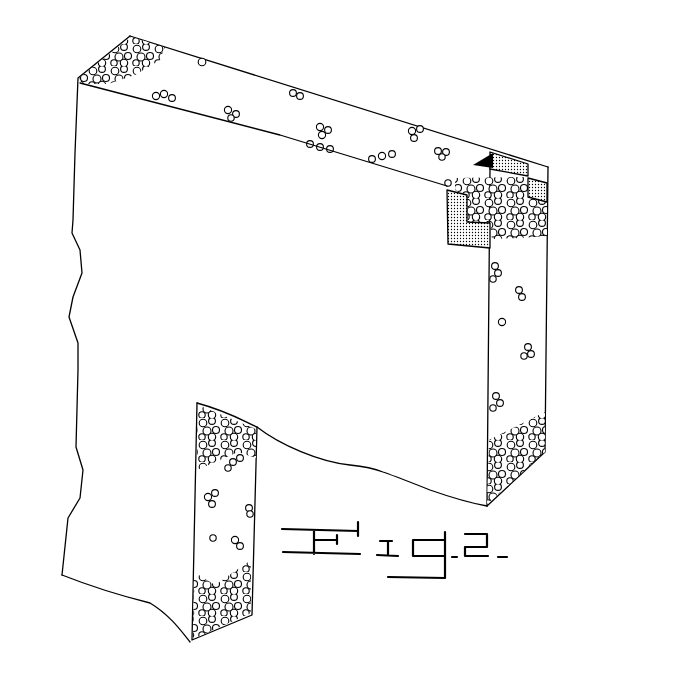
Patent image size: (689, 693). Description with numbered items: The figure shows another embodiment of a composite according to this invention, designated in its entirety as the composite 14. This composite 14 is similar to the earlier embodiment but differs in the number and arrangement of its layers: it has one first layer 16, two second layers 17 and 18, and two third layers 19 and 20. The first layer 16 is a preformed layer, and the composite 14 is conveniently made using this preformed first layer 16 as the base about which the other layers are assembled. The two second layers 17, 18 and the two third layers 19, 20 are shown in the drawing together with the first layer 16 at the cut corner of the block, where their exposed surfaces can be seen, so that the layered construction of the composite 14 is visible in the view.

The composite 14 is at (281, 81).
The first layer 16 is at (538, 257).
The second layer 17 is at (521, 160).
The second layer 18 is at (453, 230).
The third layer 19 is at (552, 161).
The third layer 20 is at (407, 302).